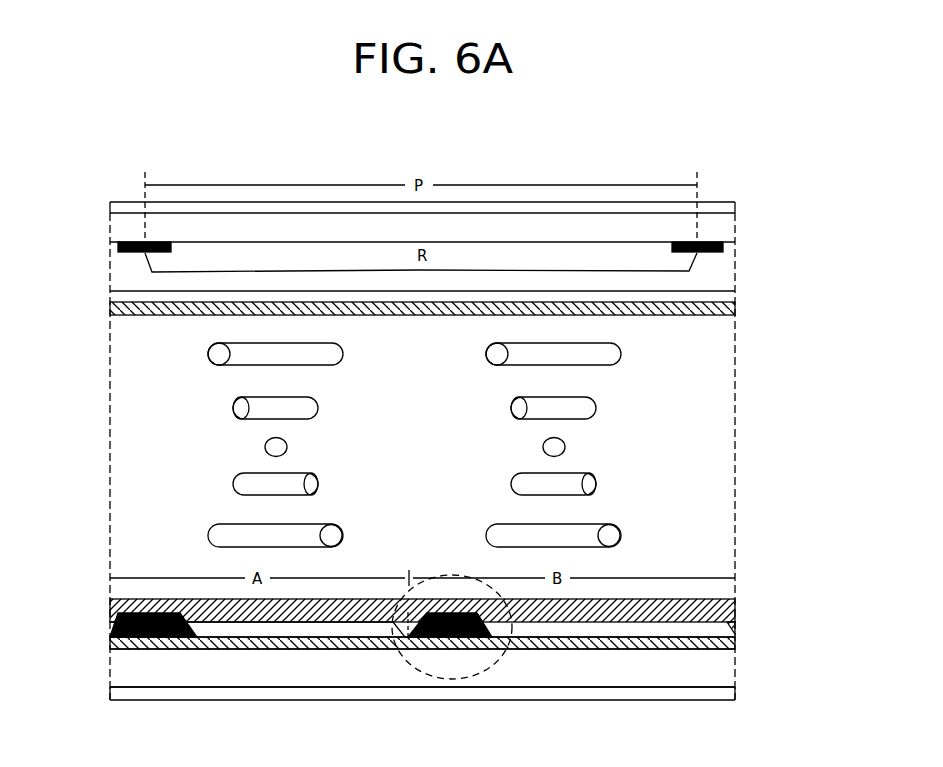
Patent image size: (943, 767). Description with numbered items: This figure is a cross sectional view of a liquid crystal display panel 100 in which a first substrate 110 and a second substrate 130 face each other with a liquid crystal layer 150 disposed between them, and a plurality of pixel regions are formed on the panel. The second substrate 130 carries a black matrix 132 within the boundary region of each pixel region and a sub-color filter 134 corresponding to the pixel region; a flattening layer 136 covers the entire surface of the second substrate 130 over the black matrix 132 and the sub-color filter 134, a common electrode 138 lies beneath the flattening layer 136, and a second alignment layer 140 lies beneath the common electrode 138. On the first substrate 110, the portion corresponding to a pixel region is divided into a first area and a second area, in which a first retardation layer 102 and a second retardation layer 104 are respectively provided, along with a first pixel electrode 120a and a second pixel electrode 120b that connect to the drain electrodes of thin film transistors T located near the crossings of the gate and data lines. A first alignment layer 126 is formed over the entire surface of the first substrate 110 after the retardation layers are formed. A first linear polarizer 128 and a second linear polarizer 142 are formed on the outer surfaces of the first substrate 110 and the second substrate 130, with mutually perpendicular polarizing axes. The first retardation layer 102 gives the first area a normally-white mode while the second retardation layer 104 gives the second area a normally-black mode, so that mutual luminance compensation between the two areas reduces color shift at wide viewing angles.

The liquid crystal display panel 100 is at (80, 700).
The first retardation layer 102 is at (227, 640).
The second retardation layer 104 is at (680, 645).
The first substrate 110 is at (732, 665).
The first pixel electrode 120a is at (297, 627).
The second pixel electrode 120b is at (625, 628).
The first alignment layer 126 is at (735, 605).
The first linear polarizer 128 is at (732, 694).
The second substrate 130 is at (730, 227).
The black matrix 132 is at (735, 247).
The sub-color filter 134 is at (720, 270).
The flattening layer 136 is at (720, 281).
The common electrode 138 is at (735, 292).
The second alignment layer 140 is at (735, 312).
The second linear polarizer 142 is at (735, 203).
The liquid crystal layer 150 is at (630, 353).
The thin film transistor T is at (493, 667).